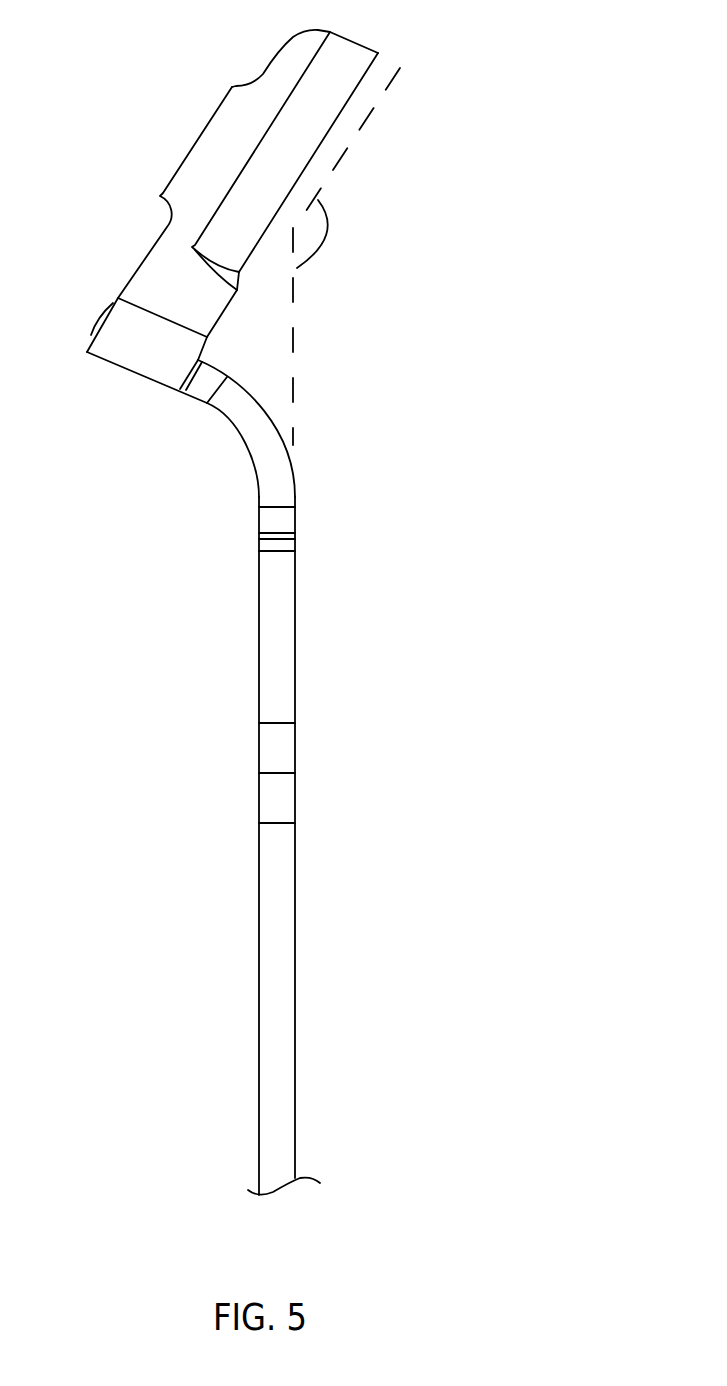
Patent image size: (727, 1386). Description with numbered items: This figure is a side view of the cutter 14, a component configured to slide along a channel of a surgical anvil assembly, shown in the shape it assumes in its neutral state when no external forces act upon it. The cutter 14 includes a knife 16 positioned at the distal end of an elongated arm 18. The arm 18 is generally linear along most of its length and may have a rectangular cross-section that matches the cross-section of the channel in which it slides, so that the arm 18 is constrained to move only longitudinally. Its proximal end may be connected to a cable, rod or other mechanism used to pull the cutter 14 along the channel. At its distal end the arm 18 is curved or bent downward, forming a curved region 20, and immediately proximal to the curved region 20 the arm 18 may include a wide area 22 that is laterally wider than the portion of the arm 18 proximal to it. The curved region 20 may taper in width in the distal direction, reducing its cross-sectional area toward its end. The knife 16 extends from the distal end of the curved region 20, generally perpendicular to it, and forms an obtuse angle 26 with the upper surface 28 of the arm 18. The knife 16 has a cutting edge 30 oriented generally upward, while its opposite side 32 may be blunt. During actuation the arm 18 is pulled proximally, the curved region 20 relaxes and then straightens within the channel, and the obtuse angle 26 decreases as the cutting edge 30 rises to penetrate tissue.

The cutter 14 is at (312, 612).
The knife 16 is at (290, 237).
The arm 18 is at (251, 846).
The curved region 20 is at (277, 426).
The wide area 22 is at (295, 631).
The obtuse angle 26 is at (328, 235).
The upper surface of the arm 28 is at (293, 849).
The cutting edge 30 is at (363, 78).
The opposite side 32 is at (177, 172).